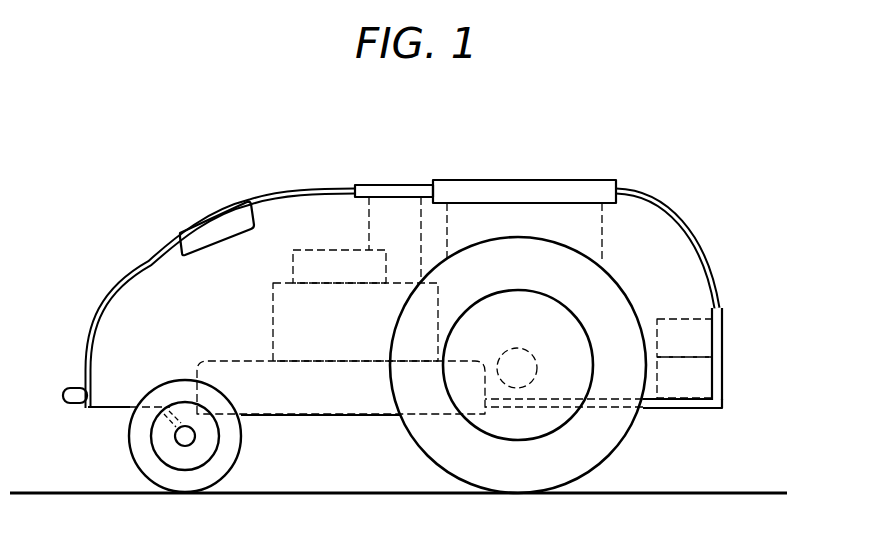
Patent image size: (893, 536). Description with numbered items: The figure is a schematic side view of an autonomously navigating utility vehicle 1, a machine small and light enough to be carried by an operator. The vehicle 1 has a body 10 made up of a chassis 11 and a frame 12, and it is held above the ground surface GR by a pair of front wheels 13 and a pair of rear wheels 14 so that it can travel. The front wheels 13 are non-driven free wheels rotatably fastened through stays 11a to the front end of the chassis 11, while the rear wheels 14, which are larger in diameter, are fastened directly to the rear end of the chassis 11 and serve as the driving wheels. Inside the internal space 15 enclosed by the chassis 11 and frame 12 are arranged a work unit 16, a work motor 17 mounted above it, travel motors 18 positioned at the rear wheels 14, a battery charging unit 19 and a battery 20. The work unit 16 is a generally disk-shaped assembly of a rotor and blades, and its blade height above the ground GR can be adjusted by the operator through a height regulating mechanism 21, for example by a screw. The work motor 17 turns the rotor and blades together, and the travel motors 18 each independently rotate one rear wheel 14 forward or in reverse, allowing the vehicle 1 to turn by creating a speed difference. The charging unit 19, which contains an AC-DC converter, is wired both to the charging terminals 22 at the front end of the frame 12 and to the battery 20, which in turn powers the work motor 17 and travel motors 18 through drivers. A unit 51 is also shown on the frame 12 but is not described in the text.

The autonomously navigating utility vehicle 1 is at (674, 183).
The body 10 is at (458, 352).
The chassis 11 is at (722, 378).
The stays 11a is at (175, 433).
The frame 12 is at (722, 296).
The front wheels 13 is at (134, 463).
The rear wheels 14 is at (419, 447).
The internal space 15 is at (684, 248).
The work unit 16 is at (319, 399).
The work motor 17 is at (344, 333).
The travel motors 18 is at (518, 349).
The battery charging unit 19 is at (699, 350).
The battery 20 is at (699, 387).
The height regulating mechanism 21 is at (355, 278).
The charging terminals 22 is at (78, 388).
The camera unit 51 is at (220, 214).
The ground surface GR is at (657, 492).